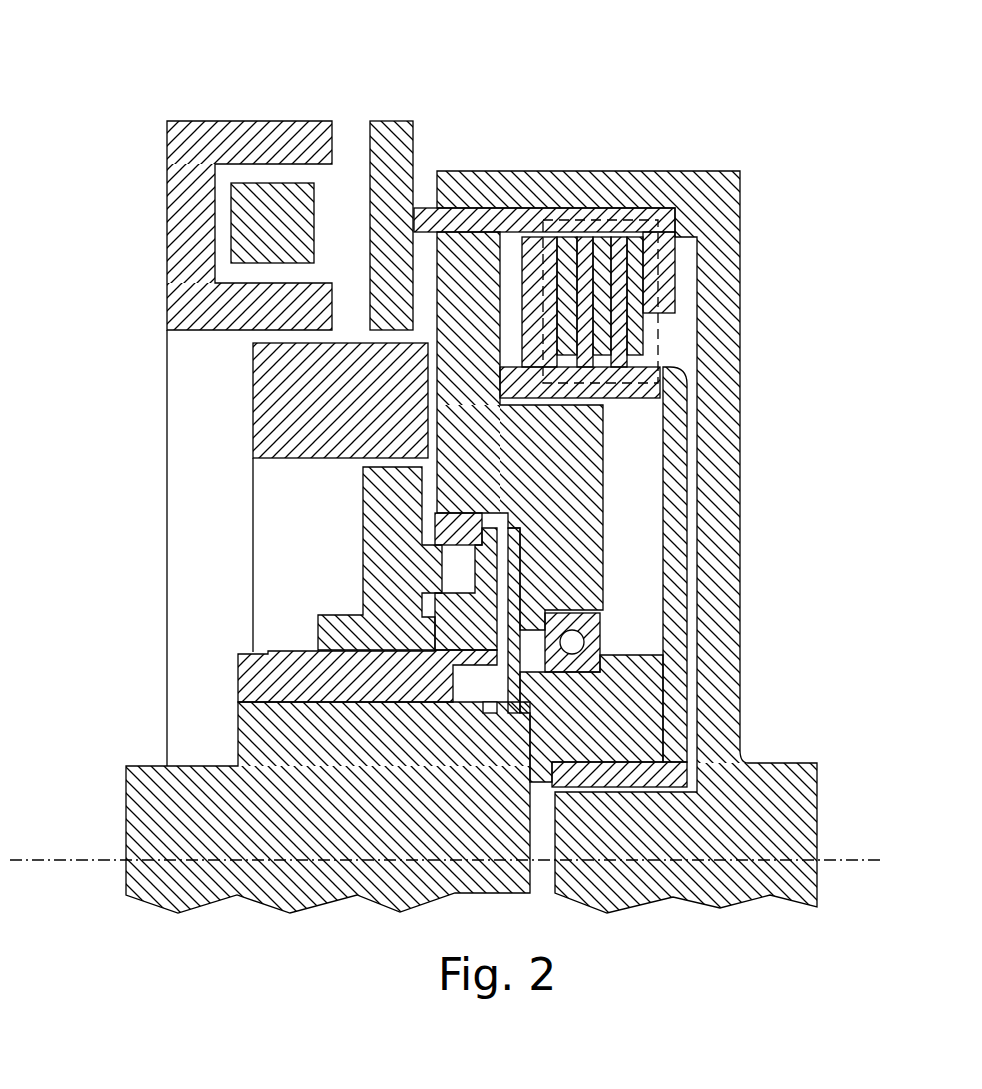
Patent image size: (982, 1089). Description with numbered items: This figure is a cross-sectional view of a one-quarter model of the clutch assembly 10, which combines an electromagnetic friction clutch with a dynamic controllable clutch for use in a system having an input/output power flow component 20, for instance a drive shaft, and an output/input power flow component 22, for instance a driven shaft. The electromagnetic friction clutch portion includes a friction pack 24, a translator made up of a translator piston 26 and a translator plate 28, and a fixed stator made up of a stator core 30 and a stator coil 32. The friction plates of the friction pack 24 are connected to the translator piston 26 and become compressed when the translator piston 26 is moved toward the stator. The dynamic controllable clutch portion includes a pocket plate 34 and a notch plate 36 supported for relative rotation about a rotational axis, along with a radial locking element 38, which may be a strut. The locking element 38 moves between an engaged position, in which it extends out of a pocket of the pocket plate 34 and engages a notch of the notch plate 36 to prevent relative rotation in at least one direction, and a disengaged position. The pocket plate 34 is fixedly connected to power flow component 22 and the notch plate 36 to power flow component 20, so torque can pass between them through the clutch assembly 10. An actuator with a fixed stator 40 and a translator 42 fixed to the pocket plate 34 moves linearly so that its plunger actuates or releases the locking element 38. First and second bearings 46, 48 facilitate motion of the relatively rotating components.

The clutch assembly 10 is at (750, 102).
The input/output power flow component 20 is at (780, 763).
The output/input power flow component 22 is at (203, 765).
The friction pack 24 is at (672, 328).
The translator piston 26 is at (486, 202).
The translator plate 28 is at (395, 120).
The stator core 30 is at (250, 120).
The stator coil 32 is at (246, 224).
The pocket plate 34 is at (238, 678).
The notch plate 36 is at (608, 487).
The locking element 38 is at (451, 515).
The stator 40 is at (253, 418).
The translator 42 is at (363, 557).
The first bearing 46 is at (658, 755).
The second bearing 48 is at (612, 620).